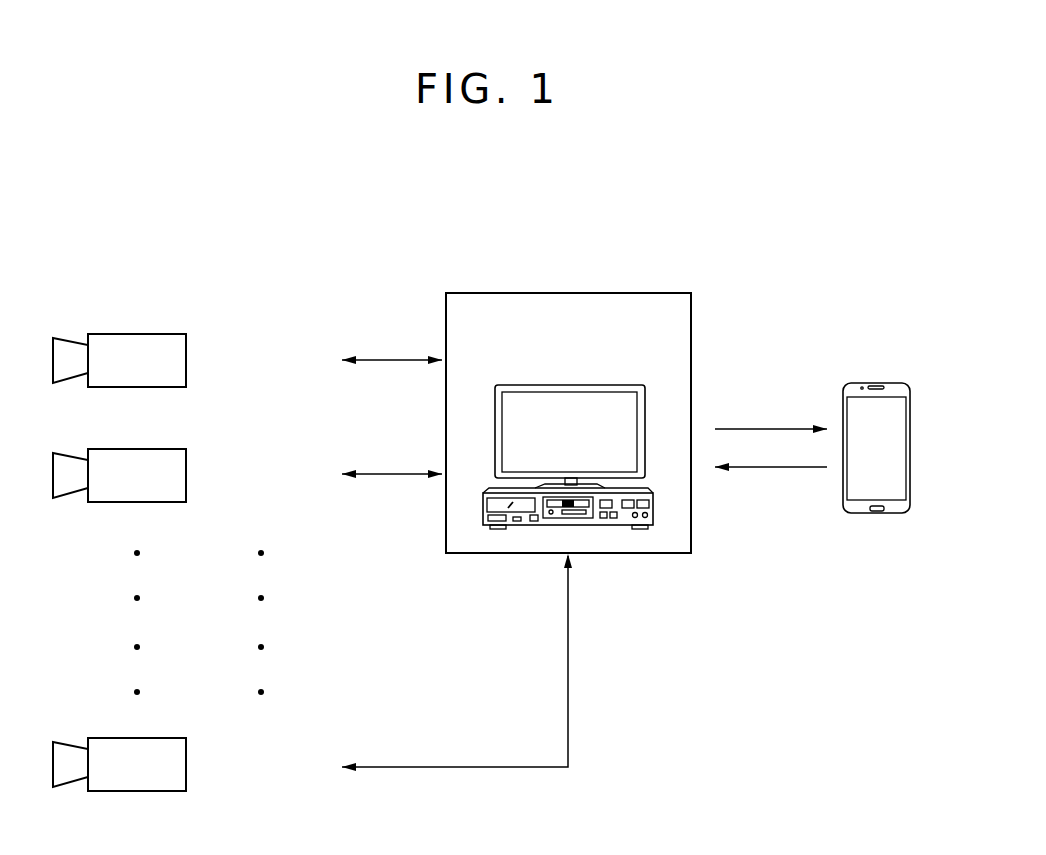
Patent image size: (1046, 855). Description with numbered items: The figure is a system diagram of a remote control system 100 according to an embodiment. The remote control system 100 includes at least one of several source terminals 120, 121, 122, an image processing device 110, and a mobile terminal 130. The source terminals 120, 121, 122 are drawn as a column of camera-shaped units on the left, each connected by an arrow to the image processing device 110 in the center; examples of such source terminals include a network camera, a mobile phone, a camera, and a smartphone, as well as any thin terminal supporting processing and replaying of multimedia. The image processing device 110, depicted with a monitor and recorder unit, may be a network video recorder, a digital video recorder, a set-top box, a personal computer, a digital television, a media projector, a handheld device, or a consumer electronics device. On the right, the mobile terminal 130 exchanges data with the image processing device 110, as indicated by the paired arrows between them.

The remote control system 100 is at (836, 271).
The image processing device 110 is at (572, 293).
The source terminal 120 is at (191, 360).
The source terminal 121 is at (191, 475).
The source terminal 122 is at (190, 764).
The mobile terminal 130 is at (877, 383).